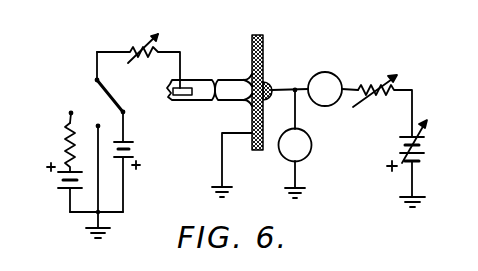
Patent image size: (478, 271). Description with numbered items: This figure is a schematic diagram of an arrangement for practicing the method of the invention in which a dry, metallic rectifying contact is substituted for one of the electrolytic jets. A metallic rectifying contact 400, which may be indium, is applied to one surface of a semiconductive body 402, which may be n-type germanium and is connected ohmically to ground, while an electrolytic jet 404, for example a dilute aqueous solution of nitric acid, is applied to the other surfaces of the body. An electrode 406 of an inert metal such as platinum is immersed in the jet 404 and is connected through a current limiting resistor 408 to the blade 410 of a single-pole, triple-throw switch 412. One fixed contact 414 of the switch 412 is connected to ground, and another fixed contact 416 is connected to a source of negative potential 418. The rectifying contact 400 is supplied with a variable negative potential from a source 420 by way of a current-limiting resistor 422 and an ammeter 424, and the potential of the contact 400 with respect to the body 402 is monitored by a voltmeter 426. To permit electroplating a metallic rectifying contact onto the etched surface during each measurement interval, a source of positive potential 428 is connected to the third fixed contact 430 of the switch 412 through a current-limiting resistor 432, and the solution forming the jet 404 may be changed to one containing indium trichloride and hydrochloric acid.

The metallic rectifying contact 400 is at (269, 85).
The semiconductive body 402 is at (263, 53).
The electrolytic jet 404 is at (231, 80).
The electrode 406 is at (180, 96).
The current limiting resistor 408 is at (135, 50).
The blade 410 is at (125, 84).
The single-pole, triple-throw switch 412 is at (57, 87).
The fixed contact 414 is at (98, 125).
The fixed contact 416 is at (123, 112).
The source of negative potential 418 is at (134, 149).
The source 420 is at (400, 148).
The current-limiting resistor 422 is at (381, 66).
The ammeter 424 is at (331, 73).
The voltmeter 426 is at (312, 138).
The source of positive potential 428 is at (58, 188).
The third fixed contact 430 is at (69, 113).
The current-limiting resistor 432 is at (66, 143).